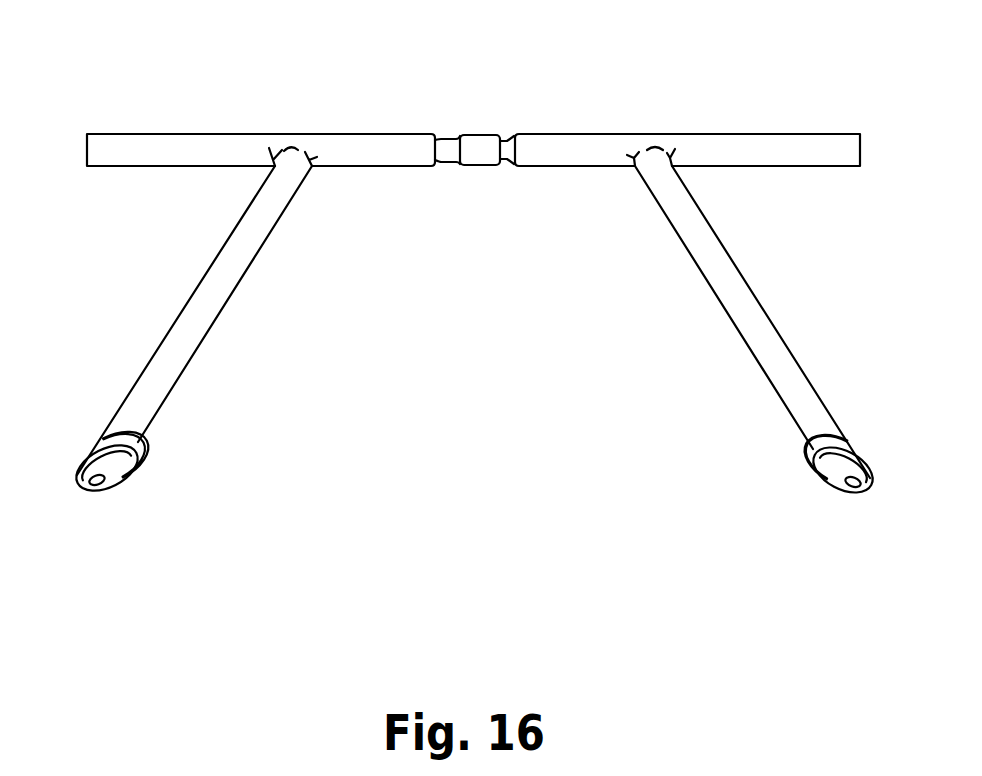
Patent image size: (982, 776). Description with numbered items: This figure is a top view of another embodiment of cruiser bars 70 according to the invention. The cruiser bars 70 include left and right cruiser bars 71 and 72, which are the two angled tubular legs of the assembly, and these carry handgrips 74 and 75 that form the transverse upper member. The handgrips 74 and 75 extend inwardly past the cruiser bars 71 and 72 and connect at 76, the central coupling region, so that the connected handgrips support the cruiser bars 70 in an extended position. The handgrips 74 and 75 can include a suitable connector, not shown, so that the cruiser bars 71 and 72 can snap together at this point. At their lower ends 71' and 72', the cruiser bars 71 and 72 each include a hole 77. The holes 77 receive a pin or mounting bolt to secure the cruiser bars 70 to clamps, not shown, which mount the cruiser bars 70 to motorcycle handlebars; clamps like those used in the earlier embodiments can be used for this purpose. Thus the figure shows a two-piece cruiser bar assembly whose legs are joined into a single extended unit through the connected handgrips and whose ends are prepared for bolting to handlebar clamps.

The cruiser bars 70 is at (458, 392).
The left cruiser bar 71 is at (740, 322).
The right cruiser bar 72 is at (194, 320).
The end of cruiser bar 71' is at (858, 430).
The end of cruiser bar 72' is at (93, 431).
The handgrip 74 is at (776, 148).
The handgrip 75 is at (157, 153).
The connection 76 is at (484, 145).
The hole 77 is at (110, 488).